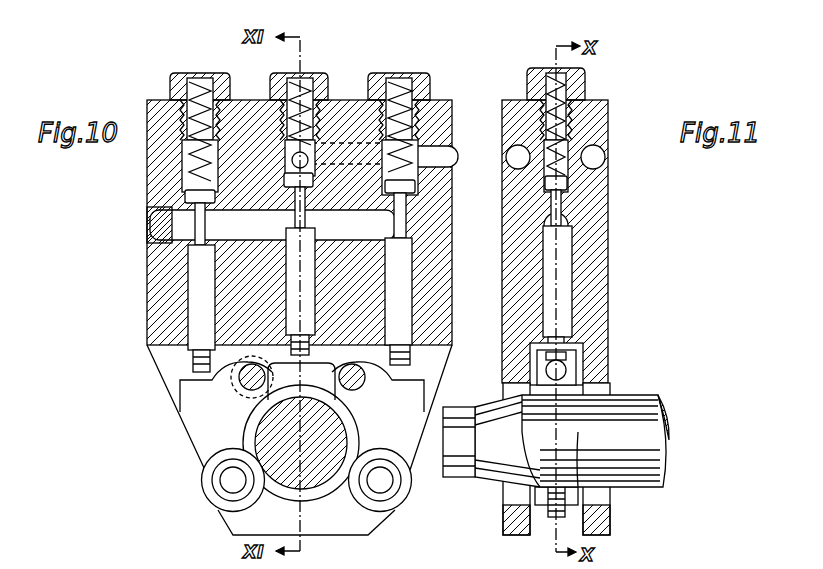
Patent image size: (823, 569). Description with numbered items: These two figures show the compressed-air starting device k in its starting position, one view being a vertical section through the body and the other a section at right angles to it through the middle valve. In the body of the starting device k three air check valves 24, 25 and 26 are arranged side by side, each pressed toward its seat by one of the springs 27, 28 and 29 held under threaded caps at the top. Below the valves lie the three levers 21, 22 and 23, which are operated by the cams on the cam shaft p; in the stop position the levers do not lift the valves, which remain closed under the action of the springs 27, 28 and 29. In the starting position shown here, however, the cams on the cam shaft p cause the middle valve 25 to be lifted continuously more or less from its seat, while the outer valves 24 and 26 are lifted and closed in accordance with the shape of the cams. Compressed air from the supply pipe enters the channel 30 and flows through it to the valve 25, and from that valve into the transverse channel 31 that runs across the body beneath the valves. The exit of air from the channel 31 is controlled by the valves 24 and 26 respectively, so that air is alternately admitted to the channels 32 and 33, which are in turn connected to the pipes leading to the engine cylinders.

In FIG. 10, the starting device k is at (157, 163).
In FIG. 10, the lever 21 is at (233, 471).
In FIG. 10, the lever 22 is at (380, 471).
In FIG. 10, the lever 23 is at (285, 372).
In FIG. 10, the air check valve 24 is at (200, 281).
In FIG. 10, the air check valve 25 is at (299, 264).
In FIG. 11, the air check valve 25 is at (557, 263).
In FIG. 10, the air check valve 26 is at (400, 272).
In FIG. 10, the spring 27 is at (202, 100).
In FIG. 10, the spring 28 is at (291, 100).
In FIG. 11, the spring 28 is at (548, 84).
In FIG. 10, the spring 29 is at (400, 98).
In FIG. 10, the channel 30 is at (347, 160).
In FIG. 11, the channel 30 is at (598, 157).
In FIG. 10, the channel 31 is at (272, 225).
In FIG. 11, the channel 31 is at (567, 225).
In FIG. 10, the channel 32 is at (440, 154).
In FIG. 11, the channel 33 is at (518, 157).
In FIG. 11, the cam shaft p is at (630, 431).